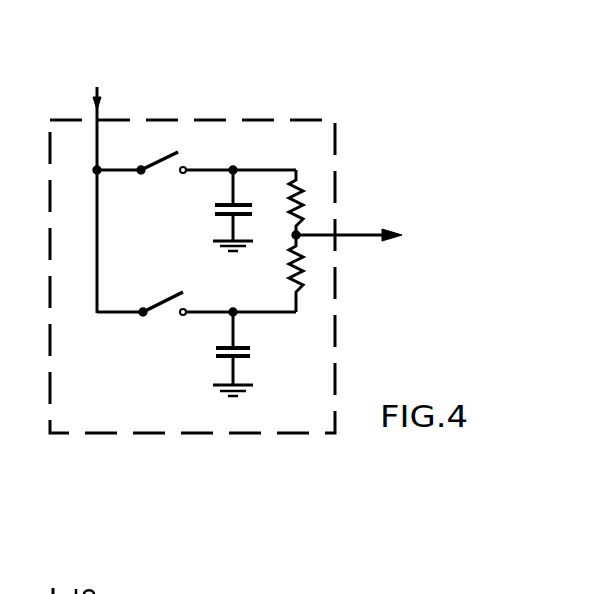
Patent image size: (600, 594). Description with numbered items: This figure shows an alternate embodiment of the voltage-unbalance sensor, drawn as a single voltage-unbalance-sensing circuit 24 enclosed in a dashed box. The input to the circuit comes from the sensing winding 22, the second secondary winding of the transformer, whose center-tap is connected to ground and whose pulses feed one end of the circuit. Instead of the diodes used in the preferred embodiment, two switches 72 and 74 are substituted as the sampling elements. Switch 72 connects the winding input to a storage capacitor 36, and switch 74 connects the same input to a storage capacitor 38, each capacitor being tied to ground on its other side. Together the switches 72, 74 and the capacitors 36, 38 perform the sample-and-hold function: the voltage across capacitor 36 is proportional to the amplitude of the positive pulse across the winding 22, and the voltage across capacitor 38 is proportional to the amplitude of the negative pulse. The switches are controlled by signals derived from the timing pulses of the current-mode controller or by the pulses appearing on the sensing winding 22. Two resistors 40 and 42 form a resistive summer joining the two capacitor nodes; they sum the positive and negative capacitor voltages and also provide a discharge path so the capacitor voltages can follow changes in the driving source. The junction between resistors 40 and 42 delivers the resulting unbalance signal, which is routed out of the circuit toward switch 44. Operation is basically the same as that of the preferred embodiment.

The sensing winding 22 is at (95, 172).
The first voltage-unbalance-sensing circuit 24 is at (236, 118).
The storage capacitor 36 is at (224, 214).
The storage capacitor 38 is at (222, 354).
The resistor 40 is at (297, 195).
The resistor 42 is at (290, 268).
The switch 44 is at (409, 235).
The switch 72 is at (161, 173).
The switch 74 is at (167, 298).